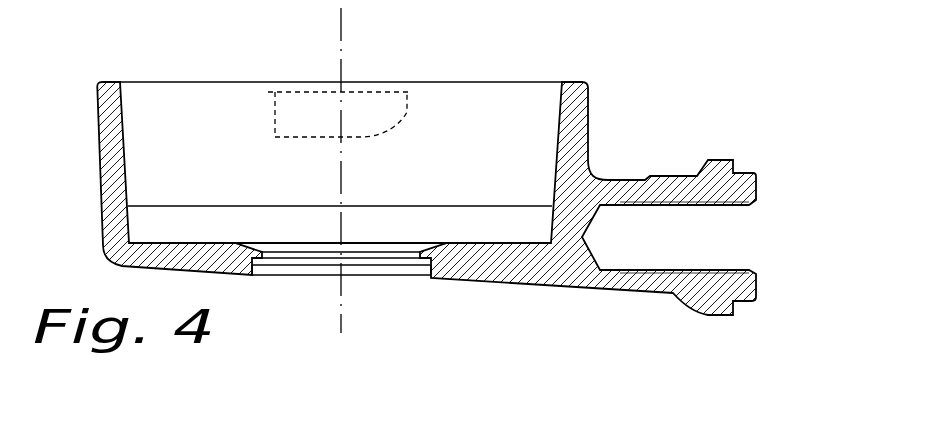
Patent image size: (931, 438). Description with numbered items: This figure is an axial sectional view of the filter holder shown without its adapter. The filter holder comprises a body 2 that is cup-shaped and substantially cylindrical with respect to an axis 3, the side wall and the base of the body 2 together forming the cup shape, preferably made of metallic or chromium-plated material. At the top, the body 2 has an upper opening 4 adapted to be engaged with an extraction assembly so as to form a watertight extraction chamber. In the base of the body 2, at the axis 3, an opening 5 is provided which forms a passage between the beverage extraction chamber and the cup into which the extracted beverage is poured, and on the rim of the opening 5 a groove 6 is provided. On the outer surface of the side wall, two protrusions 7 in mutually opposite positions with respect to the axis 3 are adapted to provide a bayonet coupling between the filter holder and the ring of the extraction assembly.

The body 2 is at (573, 122).
The axis 3 is at (352, 43).
The upper opening 4 is at (492, 126).
The opening 5 is at (375, 253).
The groove 6 is at (257, 268).
The protrusions 7 is at (292, 112).